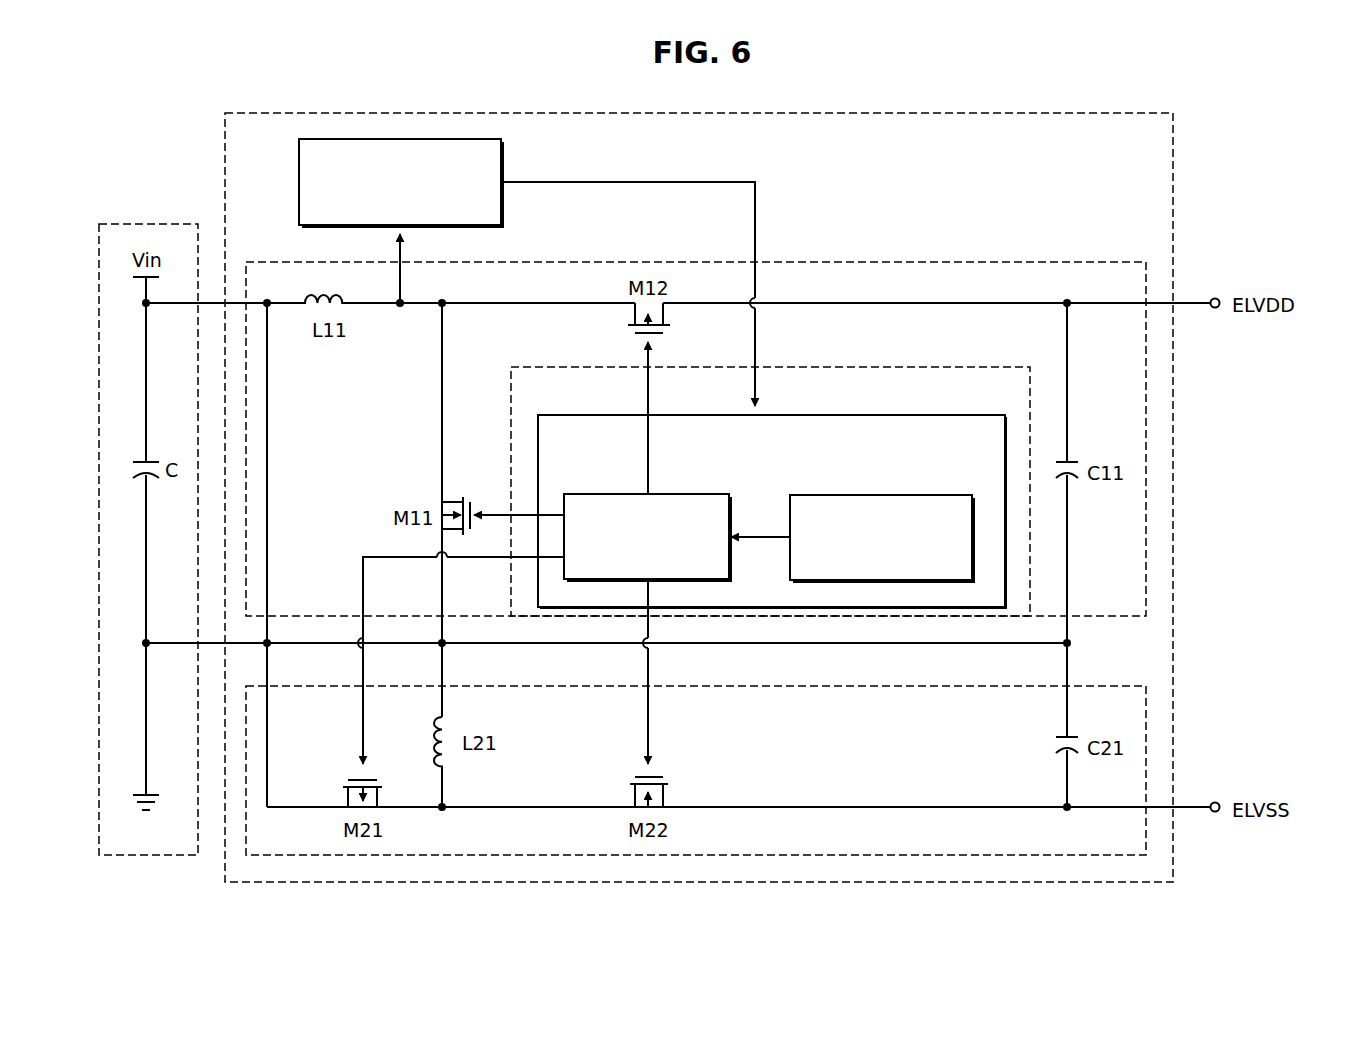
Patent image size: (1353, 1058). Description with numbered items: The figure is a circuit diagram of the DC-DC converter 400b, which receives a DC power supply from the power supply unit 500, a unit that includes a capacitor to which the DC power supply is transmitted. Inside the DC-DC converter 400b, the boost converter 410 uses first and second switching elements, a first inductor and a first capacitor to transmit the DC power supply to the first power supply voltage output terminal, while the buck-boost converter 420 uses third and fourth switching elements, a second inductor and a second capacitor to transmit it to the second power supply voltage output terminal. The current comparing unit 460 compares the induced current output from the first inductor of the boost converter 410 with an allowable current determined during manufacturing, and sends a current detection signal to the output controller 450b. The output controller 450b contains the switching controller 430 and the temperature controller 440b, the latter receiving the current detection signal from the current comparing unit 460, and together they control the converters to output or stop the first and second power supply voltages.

The DC-DC converter 400b is at (883, 112).
The power supply unit 500 is at (152, 223).
The current comparing unit 460 is at (503, 163).
The boost converter 410 is at (883, 262).
The buck-boost converter 420 is at (883, 686).
The output controller 450b is at (883, 413).
The switching controller 430 is at (665, 493).
The temperature controller 440b is at (883, 495).